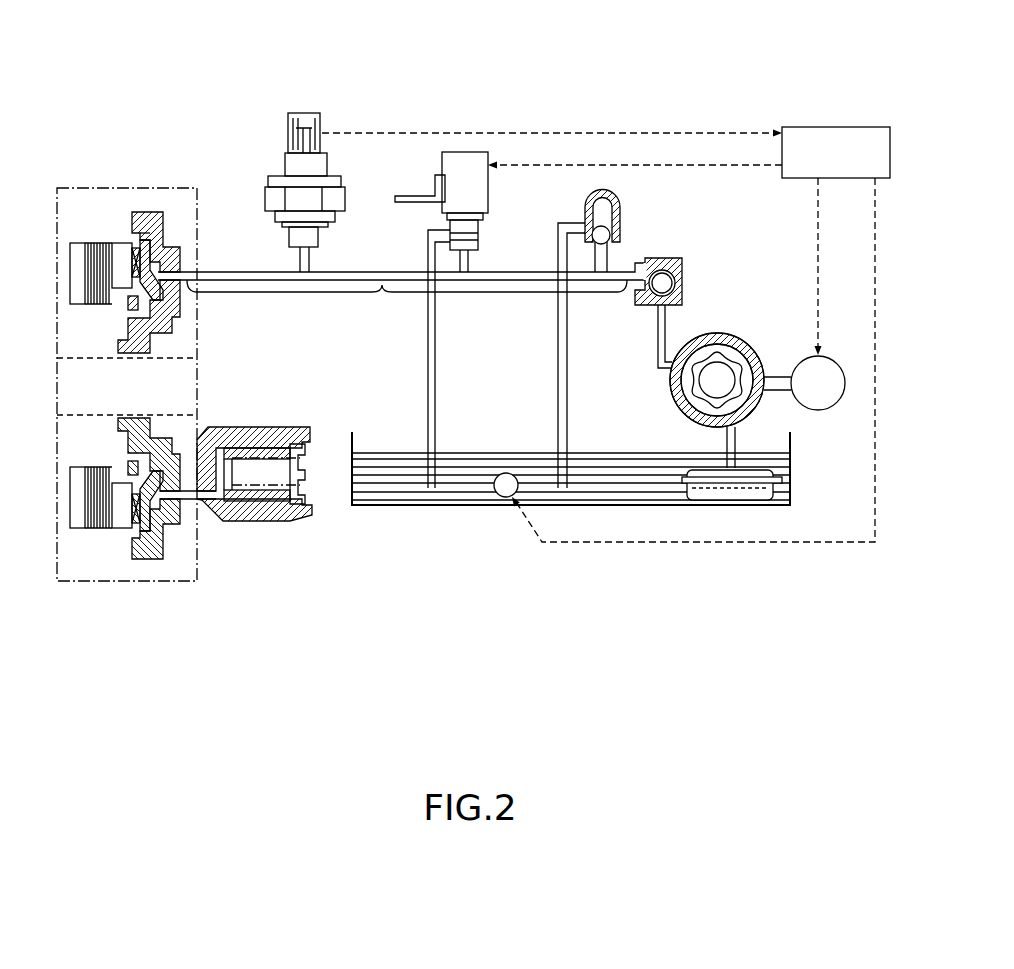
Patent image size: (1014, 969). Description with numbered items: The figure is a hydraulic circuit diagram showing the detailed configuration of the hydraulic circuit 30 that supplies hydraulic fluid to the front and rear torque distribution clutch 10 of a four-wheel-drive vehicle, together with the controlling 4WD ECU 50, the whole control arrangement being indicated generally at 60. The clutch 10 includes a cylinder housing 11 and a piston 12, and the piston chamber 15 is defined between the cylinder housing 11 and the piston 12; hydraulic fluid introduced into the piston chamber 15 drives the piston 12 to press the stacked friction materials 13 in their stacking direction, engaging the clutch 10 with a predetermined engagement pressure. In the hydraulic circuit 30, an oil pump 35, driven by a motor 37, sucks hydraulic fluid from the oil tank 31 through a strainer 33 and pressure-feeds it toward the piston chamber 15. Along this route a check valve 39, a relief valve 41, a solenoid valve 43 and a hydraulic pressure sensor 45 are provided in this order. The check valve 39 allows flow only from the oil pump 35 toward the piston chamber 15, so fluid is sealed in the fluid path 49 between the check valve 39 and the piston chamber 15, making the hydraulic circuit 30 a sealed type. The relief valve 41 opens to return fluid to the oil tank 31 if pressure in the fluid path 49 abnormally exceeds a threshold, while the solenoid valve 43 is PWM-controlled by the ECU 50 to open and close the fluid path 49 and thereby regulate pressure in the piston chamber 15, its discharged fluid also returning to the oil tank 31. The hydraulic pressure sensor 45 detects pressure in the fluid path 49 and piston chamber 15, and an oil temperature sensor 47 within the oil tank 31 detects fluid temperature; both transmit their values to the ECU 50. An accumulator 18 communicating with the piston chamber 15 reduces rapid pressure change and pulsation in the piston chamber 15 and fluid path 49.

The front and rear torque distribution clutch 10 is at (77, 188).
The cylinder housing 11 is at (150, 212).
The piston 12 is at (137, 232).
The friction materials 13 is at (100, 305).
The piston chamber 15 is at (163, 257).
The accumulator 18 is at (268, 425).
The hydraulic circuit 30 is at (562, 109).
The oil tank 31 is at (793, 480).
The strainer 33 is at (758, 468).
The oil pump 35 is at (724, 334).
The motor 37 is at (832, 358).
The check valve 39 is at (680, 258).
The relief valve 41 is at (624, 208).
The solenoid valve 43 is at (465, 152).
The hydraulic pressure sensor 45 is at (308, 114).
The oil temperature sensor 47 is at (498, 490).
The fluid path 49 is at (401, 296).
The 4WD ECU 50 is at (843, 127).
The control system 60 is at (710, 74).